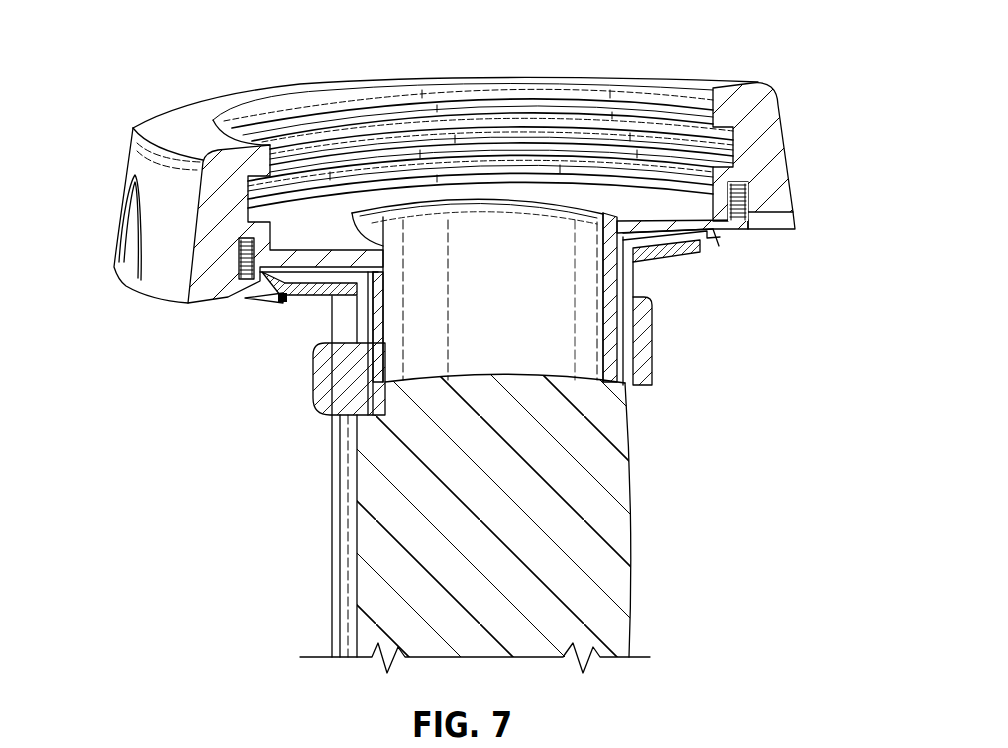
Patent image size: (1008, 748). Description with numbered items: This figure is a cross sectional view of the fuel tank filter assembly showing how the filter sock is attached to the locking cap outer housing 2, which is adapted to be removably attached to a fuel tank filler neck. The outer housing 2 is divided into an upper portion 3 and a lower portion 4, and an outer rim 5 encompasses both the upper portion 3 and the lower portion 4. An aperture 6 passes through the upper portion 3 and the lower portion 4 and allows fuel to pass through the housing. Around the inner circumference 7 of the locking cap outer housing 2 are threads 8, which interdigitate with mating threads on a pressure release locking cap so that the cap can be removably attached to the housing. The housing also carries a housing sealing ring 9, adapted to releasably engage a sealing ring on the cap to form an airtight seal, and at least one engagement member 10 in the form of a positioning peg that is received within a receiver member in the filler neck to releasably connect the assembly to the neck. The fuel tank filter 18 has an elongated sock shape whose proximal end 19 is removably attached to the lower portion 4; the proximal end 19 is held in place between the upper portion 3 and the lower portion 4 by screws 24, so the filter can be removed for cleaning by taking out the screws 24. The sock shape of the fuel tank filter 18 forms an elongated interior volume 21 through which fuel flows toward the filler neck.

The locking cap outer housing 2 is at (123, 93).
The upper portion 3 is at (191, 123).
The lower portion 4 is at (633, 295).
The outer rim 5 is at (790, 147).
The aperture 6 is at (496, 257).
The inner circumference 7 is at (330, 143).
The threads 8 is at (454, 107).
The housing sealing ring 9 is at (678, 258).
The engagement member 10 is at (643, 363).
The fuel tank filter 18 is at (331, 545).
The proximal end 19 is at (283, 303).
The elongated interior volume 21 is at (617, 485).
The screws 24 is at (750, 207).